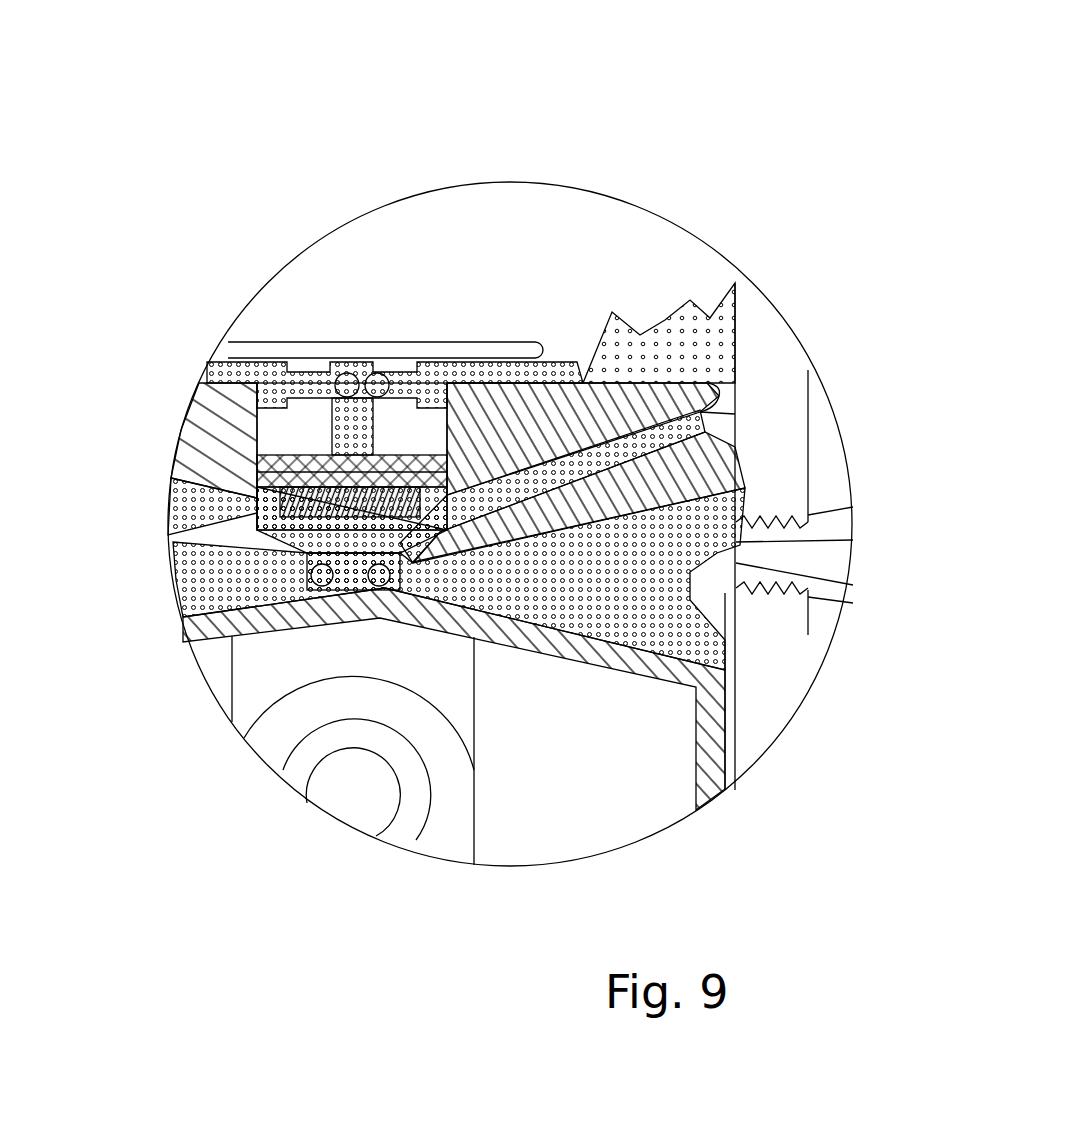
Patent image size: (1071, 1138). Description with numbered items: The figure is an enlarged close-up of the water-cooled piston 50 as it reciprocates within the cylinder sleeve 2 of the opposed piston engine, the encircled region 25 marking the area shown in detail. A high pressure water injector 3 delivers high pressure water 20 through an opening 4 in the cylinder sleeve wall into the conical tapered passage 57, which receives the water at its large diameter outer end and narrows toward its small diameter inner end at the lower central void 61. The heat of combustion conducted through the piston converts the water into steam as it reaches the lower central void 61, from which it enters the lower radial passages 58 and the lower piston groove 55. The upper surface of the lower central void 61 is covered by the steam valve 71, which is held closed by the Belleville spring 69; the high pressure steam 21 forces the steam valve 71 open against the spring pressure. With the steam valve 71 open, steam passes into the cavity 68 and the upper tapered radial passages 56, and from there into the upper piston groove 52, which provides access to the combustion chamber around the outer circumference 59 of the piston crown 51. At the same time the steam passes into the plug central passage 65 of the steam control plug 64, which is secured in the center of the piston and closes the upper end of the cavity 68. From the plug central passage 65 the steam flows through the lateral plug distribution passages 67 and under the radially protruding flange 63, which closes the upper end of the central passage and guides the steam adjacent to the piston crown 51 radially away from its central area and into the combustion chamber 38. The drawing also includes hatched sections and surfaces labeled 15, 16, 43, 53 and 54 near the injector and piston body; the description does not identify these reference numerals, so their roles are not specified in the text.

The cylinder sleeve 2 is at (737, 339).
The high pressure water injector 3 is at (825, 522).
The opening 4 is at (736, 550).
The inlet bore 15 is at (400, 833).
The inlet wall 16 is at (447, 827).
The high pressure water 20 is at (843, 556).
The steam 21 is at (697, 350).
The detail circle 25 is at (508, 242).
The combustion chamber 38 is at (605, 207).
The housing wall 43 is at (737, 737).
The piston 50 is at (258, 907).
The piston crown 51 is at (590, 365).
The upper piston groove 52 is at (710, 406).
The seal 53 is at (737, 450).
The lower body 54 is at (665, 650).
The lower piston groove 55 is at (740, 588).
The upper tapered radial passages 56 is at (250, 535).
The conical tapered passage 57 is at (643, 580).
The lower radial passages 58 is at (312, 582).
The outer circumference 59 is at (728, 368).
The lower central void 61 is at (336, 585).
The radially protruding flange 63 is at (460, 342).
The steam control plug 64 is at (392, 342).
The plug central passage 65 is at (345, 378).
The radial plug distribution passages 67 is at (400, 375).
The cavity 68 is at (257, 390).
The Belleville spring 69 is at (365, 465).
The steam valve 71 is at (252, 482).